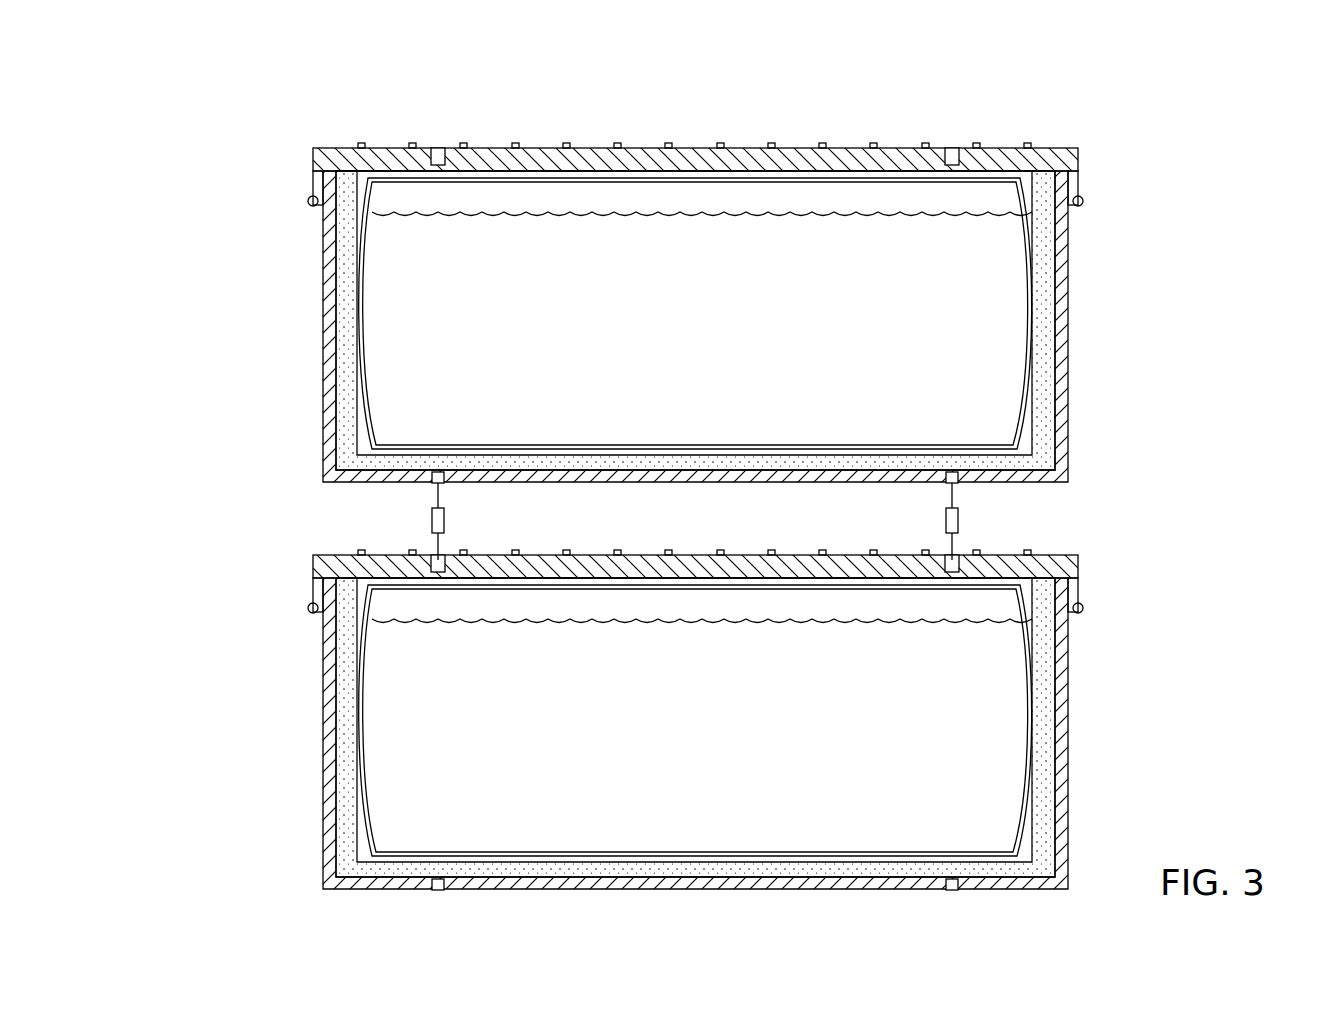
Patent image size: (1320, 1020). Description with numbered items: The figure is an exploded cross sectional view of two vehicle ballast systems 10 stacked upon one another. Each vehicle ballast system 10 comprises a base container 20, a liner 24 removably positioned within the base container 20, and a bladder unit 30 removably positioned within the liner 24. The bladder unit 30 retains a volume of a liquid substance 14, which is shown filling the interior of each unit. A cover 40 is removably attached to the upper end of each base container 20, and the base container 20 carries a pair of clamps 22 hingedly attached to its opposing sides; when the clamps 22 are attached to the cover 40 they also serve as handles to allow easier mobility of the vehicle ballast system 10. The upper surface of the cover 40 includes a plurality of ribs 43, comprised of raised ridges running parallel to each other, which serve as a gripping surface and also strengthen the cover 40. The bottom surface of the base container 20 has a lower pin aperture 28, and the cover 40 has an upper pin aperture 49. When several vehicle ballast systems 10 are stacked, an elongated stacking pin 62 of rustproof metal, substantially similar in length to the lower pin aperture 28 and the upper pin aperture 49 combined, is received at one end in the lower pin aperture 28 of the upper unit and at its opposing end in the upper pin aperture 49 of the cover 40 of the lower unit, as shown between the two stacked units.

The vehicle ballast system 10 is at (240, 214).
The liquid substance 14 is at (995, 300).
The base container 20 is at (314, 440).
The clamps 22 is at (1080, 162).
The liner 24 is at (345, 380).
The lower pin aperture 28 is at (436, 487).
The bladder unit 30 is at (358, 268).
The cover 40 is at (640, 138).
The ribs 43 is at (772, 143).
The upper pin aperture 49 is at (437, 150).
The stacking pin 62 is at (960, 523).